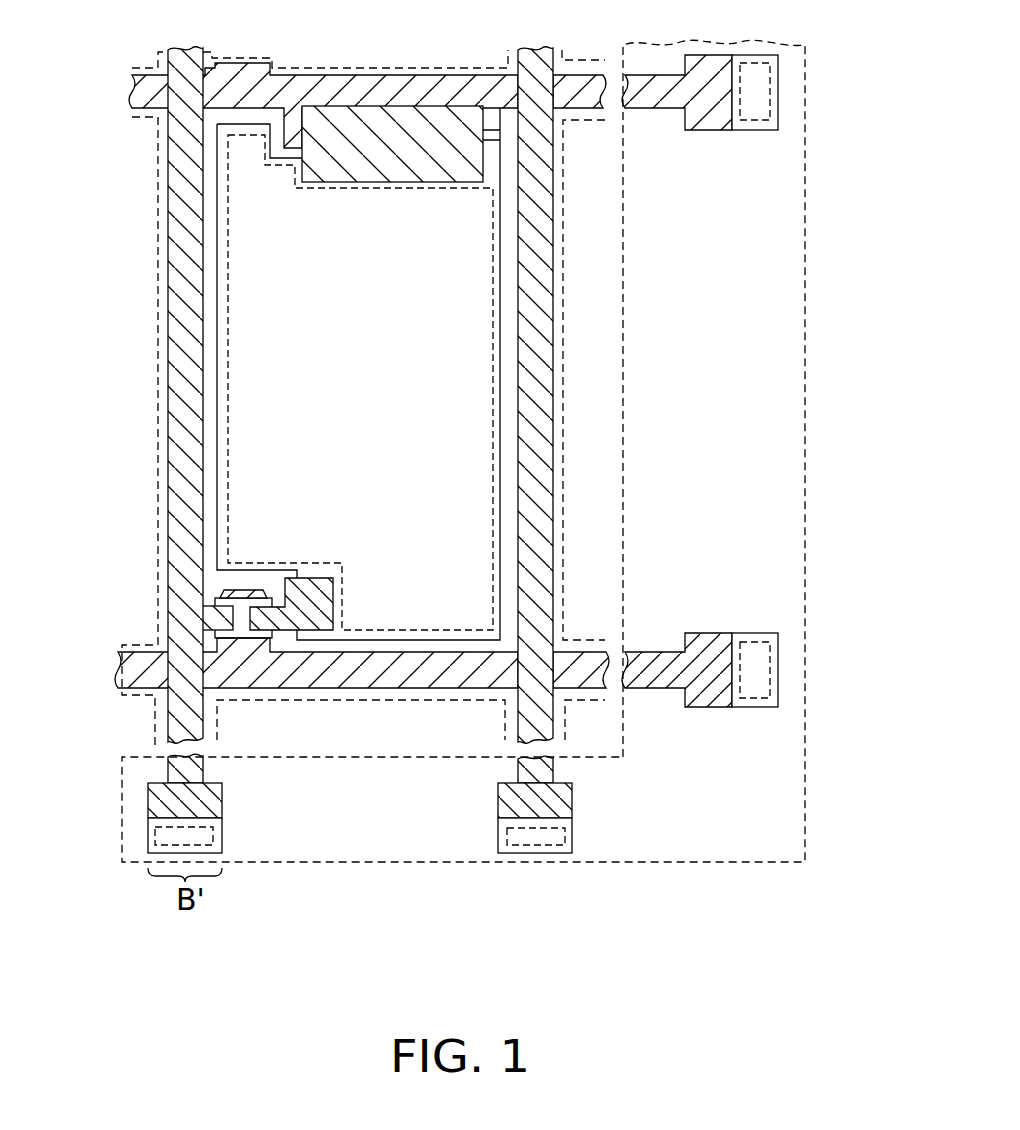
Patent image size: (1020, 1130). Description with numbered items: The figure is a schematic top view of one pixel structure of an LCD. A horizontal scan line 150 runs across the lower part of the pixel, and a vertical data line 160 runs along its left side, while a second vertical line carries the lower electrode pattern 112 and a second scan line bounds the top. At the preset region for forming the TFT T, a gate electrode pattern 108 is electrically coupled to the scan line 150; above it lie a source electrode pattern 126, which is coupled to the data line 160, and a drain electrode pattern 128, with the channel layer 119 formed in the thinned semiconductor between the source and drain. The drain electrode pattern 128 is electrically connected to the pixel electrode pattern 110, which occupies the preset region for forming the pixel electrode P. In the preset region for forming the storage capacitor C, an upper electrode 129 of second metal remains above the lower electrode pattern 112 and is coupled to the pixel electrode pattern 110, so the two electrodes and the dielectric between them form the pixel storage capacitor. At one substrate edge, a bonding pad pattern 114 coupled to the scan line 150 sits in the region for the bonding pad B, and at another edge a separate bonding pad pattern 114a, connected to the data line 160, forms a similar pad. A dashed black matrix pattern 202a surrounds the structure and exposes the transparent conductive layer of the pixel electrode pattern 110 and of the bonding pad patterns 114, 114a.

The pixel electrode pattern 110 is at (238, 282).
The lower electrode pattern 112 is at (495, 118).
The bonding pad pattern 114 is at (736, 628).
The separate bonding pad pattern 114a is at (140, 826).
The channel layer 119 is at (238, 634).
The source electrode pattern 126 is at (208, 622).
The drain electrode pattern 128 is at (298, 613).
The upper electrode 129 is at (380, 162).
The scan line 150 is at (437, 690).
The data line 160 is at (185, 398).
The black matrix pattern 202a is at (158, 172).
The gate electrode pattern 108 is at (243, 591).
The pixel electrode P is at (417, 186).
The TFT T is at (332, 551).
The bonding pad B is at (778, 722).
The storage capacitor C is at (269, 149).